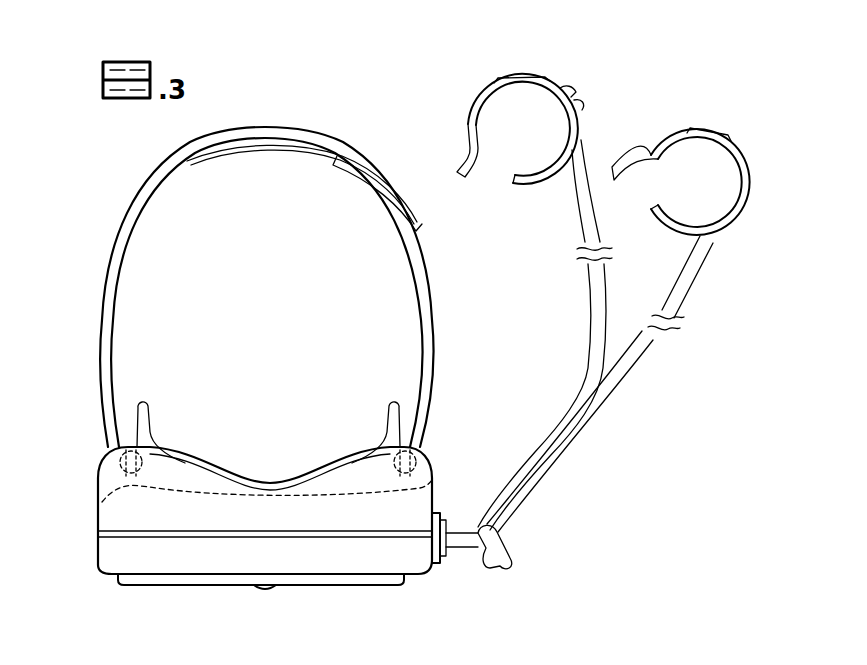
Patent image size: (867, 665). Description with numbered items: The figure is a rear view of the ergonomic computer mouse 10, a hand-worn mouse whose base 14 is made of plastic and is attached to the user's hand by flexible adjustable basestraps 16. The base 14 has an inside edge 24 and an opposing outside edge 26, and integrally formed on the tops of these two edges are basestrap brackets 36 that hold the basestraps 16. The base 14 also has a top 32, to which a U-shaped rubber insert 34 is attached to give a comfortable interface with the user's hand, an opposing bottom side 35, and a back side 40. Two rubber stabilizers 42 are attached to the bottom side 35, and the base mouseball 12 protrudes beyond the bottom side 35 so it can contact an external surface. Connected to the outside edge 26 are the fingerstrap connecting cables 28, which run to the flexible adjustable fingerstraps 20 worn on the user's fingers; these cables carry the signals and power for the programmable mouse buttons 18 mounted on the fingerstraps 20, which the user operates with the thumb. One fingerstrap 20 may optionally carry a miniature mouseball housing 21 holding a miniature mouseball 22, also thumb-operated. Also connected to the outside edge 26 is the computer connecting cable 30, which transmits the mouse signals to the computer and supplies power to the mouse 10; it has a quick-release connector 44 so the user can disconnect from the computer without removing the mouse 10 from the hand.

The ergonomic computer mouse 10 is at (318, 93).
The base mouseball 12 is at (262, 588).
The base 14 is at (380, 571).
The basestraps 16 is at (340, 167).
The mouse buttons 18 is at (512, 66).
The fingerstraps 20 is at (482, 119).
The miniature mouseball housing 21 is at (563, 90).
The miniature mouseball 22 is at (580, 93).
The inside edge 24 is at (97, 531).
The outside edge 26 is at (434, 500).
The fingerstrap connecting cables 28 is at (593, 318).
The computer connecting cable 30 is at (500, 543).
The top 32 is at (272, 458).
The rubber insert 34 is at (194, 468).
The bottom side 35 is at (287, 598).
The basestrap brackets 36 is at (122, 466).
The back side 40 is at (405, 555).
The stabilizers 42 is at (323, 587).
The quick-release connector 44 is at (442, 557).